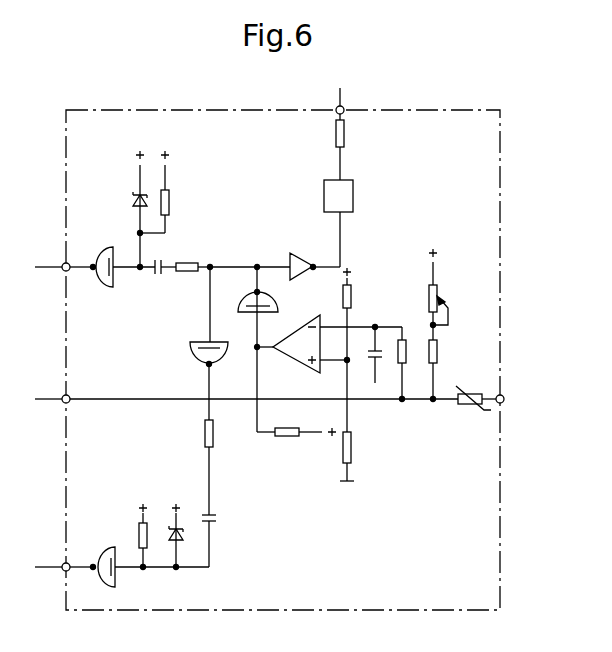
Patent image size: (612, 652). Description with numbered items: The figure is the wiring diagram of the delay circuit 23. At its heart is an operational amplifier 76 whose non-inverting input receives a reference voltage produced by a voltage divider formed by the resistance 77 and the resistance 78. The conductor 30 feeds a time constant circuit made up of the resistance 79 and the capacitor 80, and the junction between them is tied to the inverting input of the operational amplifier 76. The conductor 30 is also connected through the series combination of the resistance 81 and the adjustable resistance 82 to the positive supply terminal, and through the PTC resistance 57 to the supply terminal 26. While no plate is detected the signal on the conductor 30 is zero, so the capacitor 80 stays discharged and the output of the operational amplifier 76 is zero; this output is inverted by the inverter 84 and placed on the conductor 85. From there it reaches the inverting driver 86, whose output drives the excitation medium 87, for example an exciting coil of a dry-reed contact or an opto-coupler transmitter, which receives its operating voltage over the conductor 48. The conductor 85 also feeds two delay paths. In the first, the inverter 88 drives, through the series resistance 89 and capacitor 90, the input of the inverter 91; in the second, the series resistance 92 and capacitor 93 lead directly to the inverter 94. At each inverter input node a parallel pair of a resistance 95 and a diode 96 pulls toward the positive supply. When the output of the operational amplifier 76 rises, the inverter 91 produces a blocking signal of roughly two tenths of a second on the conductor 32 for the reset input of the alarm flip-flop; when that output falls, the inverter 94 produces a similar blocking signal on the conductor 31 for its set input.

The delay circuit 23 is at (500, 200).
The conductor 48 is at (343, 100).
The excitation medium 87 is at (353, 196).
The conductor 31 is at (50, 262).
The inverter 94 is at (102, 252).
The diode 96 is at (134, 199).
The resistance 95 is at (170, 199).
The capacitor 93 is at (158, 273).
The resistance 92 is at (190, 273).
The conductor 85 is at (238, 265).
The inverting driver 86 is at (300, 252).
The inverter 88 is at (198, 352).
The inverter 84 is at (250, 308).
The operational amplifier 76 is at (300, 340).
The resistance 77 is at (352, 298).
The resistance 78 is at (351, 440).
The capacitor 80 is at (371, 368).
The resistance 79 is at (406, 352).
The adjustable resistance 82 is at (437, 292).
The resistance 81 is at (438, 352).
The conductor 30 is at (42, 404).
The PTC resistance 57 is at (470, 408).
The supply terminal 26 is at (504, 401).
The resistance 89 is at (213, 432).
The capacitor 90 is at (214, 514).
The conductor 32 is at (42, 562).
The inverter 91 is at (103, 556).